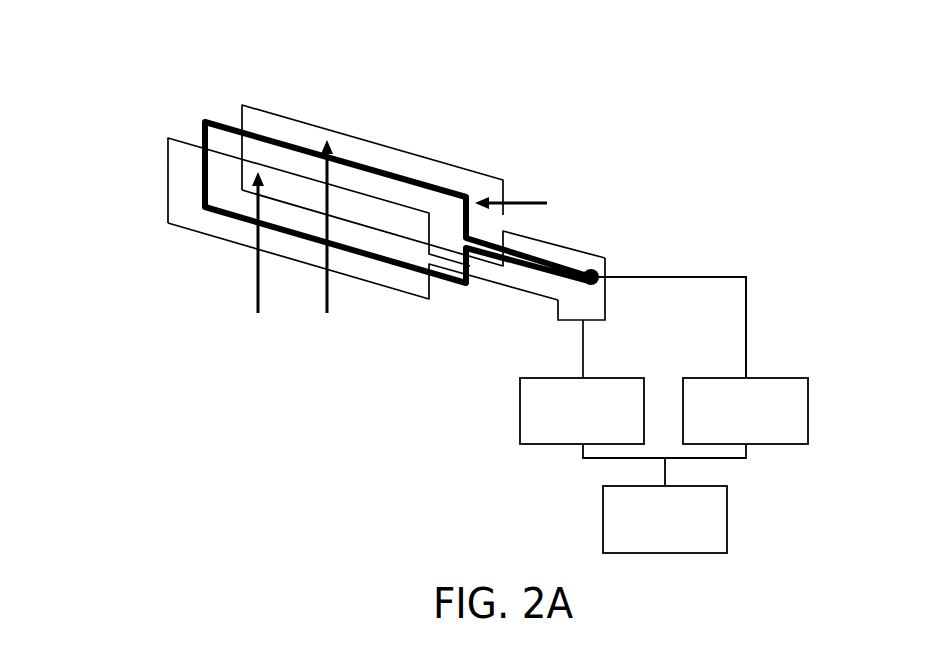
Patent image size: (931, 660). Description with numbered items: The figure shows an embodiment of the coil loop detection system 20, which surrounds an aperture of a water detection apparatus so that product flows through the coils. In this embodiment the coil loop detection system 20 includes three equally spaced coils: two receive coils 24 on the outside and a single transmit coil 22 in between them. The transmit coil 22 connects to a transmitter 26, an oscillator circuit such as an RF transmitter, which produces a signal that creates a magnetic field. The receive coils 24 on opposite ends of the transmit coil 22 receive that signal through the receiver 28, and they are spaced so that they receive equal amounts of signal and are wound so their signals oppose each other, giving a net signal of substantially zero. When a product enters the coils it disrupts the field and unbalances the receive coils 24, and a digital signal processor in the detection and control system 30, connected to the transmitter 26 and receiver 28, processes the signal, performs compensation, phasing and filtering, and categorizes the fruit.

The coil loop detection system 20 is at (592, 44).
The transmit coil 22 is at (417, 178).
The receive coil 24 is at (240, 105).
The transmitter 26 is at (808, 412).
The receiver 28 is at (520, 412).
The detection and control system 30 is at (603, 515).